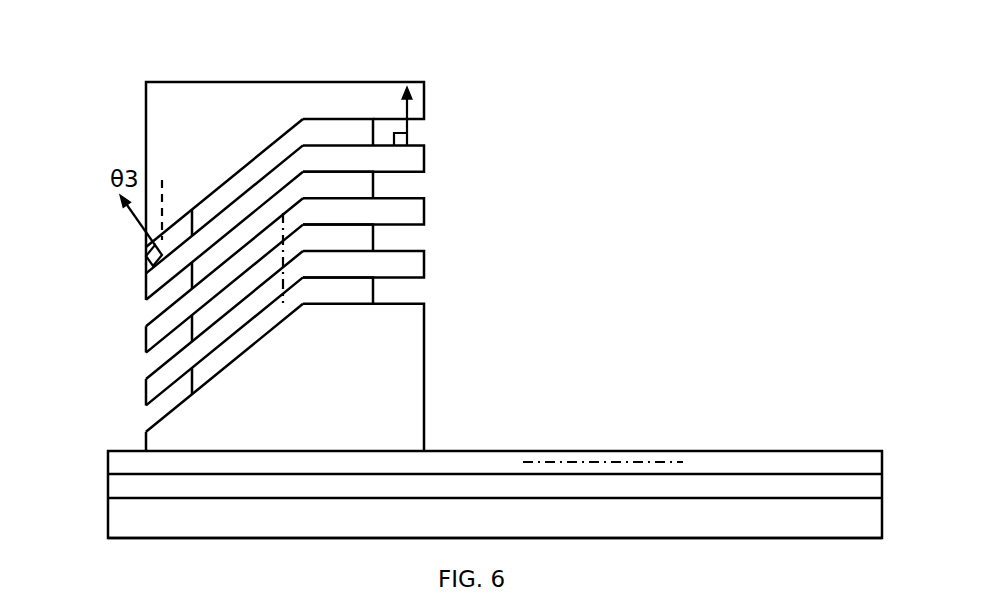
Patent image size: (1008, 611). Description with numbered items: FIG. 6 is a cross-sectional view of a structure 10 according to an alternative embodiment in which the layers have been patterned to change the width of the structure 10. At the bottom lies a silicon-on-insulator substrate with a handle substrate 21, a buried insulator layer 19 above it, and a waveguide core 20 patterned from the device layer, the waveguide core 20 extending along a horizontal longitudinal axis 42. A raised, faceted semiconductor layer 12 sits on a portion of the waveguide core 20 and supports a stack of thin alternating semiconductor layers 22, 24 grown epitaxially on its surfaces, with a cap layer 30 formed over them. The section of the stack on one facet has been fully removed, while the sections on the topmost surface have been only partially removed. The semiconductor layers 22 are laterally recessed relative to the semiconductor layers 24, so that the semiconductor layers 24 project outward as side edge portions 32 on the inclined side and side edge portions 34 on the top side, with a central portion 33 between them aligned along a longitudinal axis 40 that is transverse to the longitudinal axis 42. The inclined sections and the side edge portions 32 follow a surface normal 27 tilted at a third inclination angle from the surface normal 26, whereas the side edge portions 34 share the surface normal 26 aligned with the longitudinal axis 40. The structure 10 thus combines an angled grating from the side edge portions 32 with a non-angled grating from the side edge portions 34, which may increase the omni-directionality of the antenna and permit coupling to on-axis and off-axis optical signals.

The structure 10 is at (552, 80).
The semiconductor layer 12 is at (203, 410).
The buried insulator layer 19 is at (180, 492).
The waveguide core 20 is at (180, 466).
The handle substrate 21 is at (180, 522).
The semiconductor layers 22 is at (345, 133).
The semiconductor layers 24 is at (165, 275).
The surface normal 26 is at (405, 110).
The surface normal 27 is at (143, 225).
The cap layer 30 is at (182, 105).
The side edge portions 32 is at (146, 51).
The central portion 33 is at (192, 73).
The side edge portions 34 is at (373, 51).
The longitudinal axis 40 is at (284, 302).
The longitudinal axis 42 is at (593, 463).